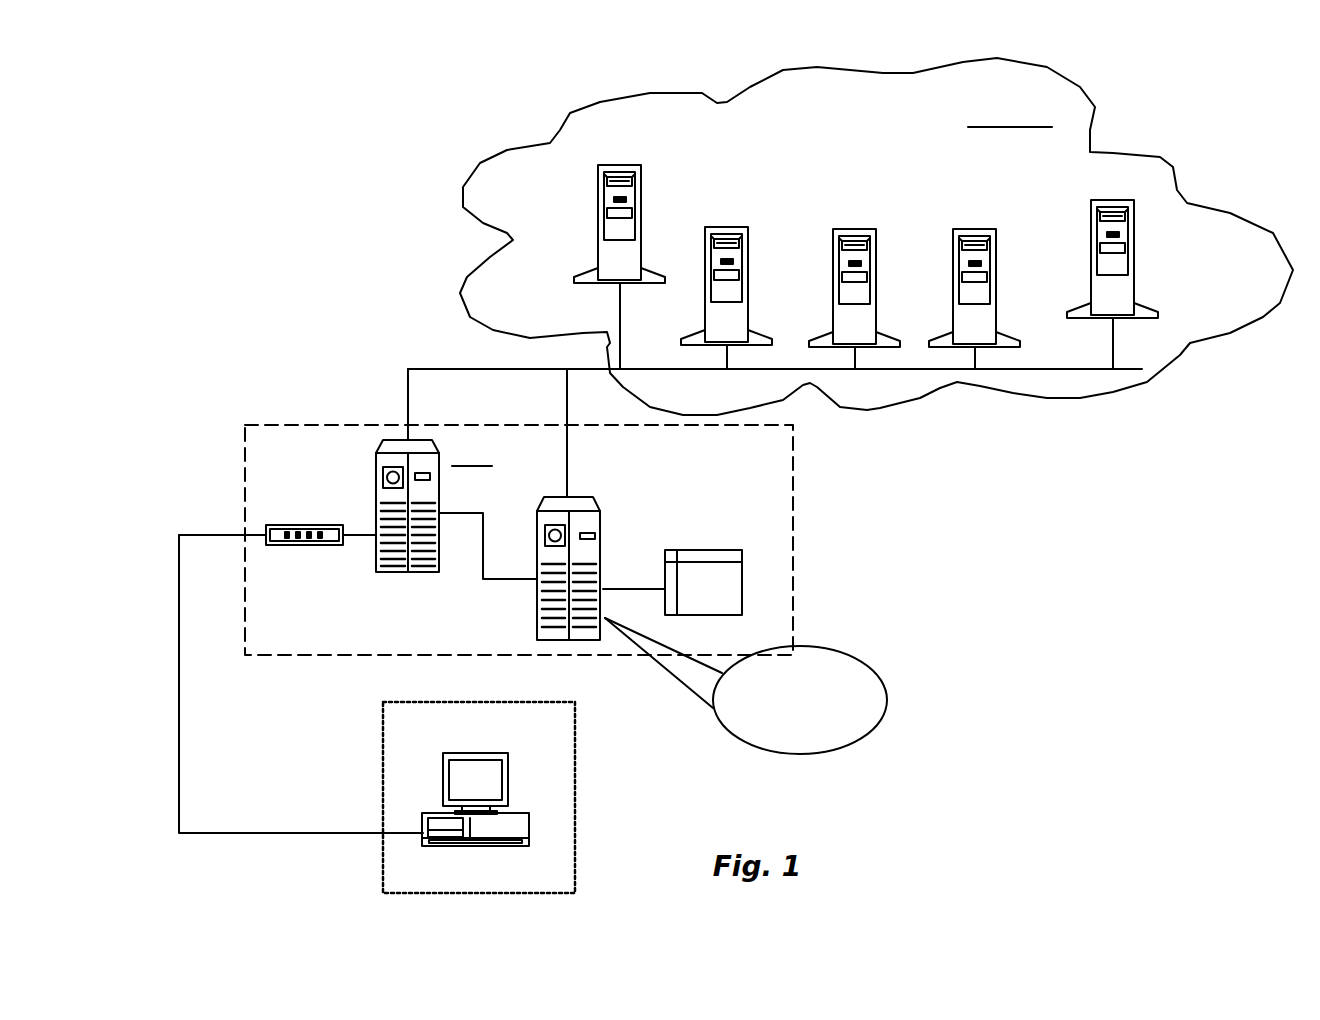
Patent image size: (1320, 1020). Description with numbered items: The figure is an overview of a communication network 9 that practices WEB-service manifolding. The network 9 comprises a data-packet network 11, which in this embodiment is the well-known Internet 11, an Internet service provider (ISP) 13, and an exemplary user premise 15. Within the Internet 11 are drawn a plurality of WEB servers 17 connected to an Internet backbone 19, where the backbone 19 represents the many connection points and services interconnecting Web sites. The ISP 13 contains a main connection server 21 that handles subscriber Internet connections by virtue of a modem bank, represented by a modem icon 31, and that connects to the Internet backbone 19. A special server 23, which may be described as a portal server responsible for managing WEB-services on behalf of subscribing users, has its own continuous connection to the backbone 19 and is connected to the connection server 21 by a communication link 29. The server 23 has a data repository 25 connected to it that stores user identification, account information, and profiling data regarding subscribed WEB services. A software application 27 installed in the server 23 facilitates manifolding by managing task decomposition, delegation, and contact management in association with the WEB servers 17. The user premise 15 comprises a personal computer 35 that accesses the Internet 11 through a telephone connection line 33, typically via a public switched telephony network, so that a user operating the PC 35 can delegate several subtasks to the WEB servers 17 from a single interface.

The communication network 9 is at (270, 304).
The data-packet network 11 is at (702, 93).
The Internet service provider 13 is at (793, 560).
The user premise 15 is at (362, 783).
The WEB servers 17 is at (1075, 182).
The Internet backbone 19 is at (1013, 370).
The main connection server 21 is at (376, 505).
The special server 23 is at (603, 542).
The data repository 25 is at (690, 550).
The software application 27 is at (887, 708).
The communication link 29 is at (500, 579).
The modem icon 31 is at (318, 546).
The telephone connection line 33 is at (296, 833).
The personal computer 35 is at (508, 785).